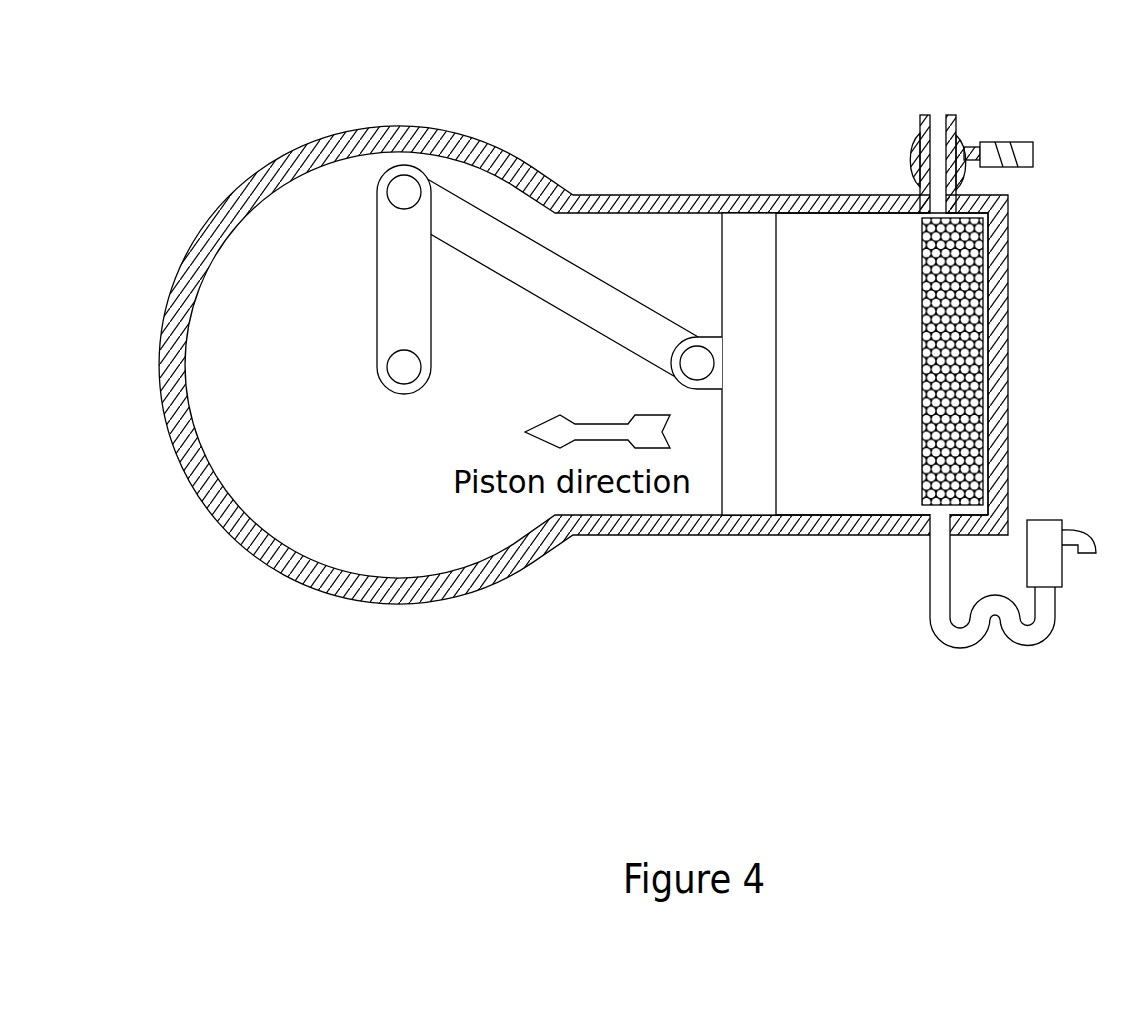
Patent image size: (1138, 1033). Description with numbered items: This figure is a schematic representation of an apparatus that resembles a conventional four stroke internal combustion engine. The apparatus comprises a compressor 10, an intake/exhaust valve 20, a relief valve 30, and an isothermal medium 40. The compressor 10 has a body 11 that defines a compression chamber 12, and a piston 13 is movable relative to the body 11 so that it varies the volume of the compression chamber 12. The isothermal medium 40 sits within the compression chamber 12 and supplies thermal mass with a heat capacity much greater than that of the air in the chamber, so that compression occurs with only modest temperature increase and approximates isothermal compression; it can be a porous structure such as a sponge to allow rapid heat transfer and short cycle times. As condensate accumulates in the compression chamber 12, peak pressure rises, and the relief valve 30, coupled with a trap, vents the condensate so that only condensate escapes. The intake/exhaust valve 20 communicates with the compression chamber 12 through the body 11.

The compressor 10 is at (420, 98).
The body 11 is at (512, 148).
The compression chamber 12 is at (855, 364).
The piston 13 is at (750, 470).
The intake/exhaust valve 20 is at (970, 150).
The relief valve 30 is at (1043, 540).
The isothermal medium 40 is at (970, 242).